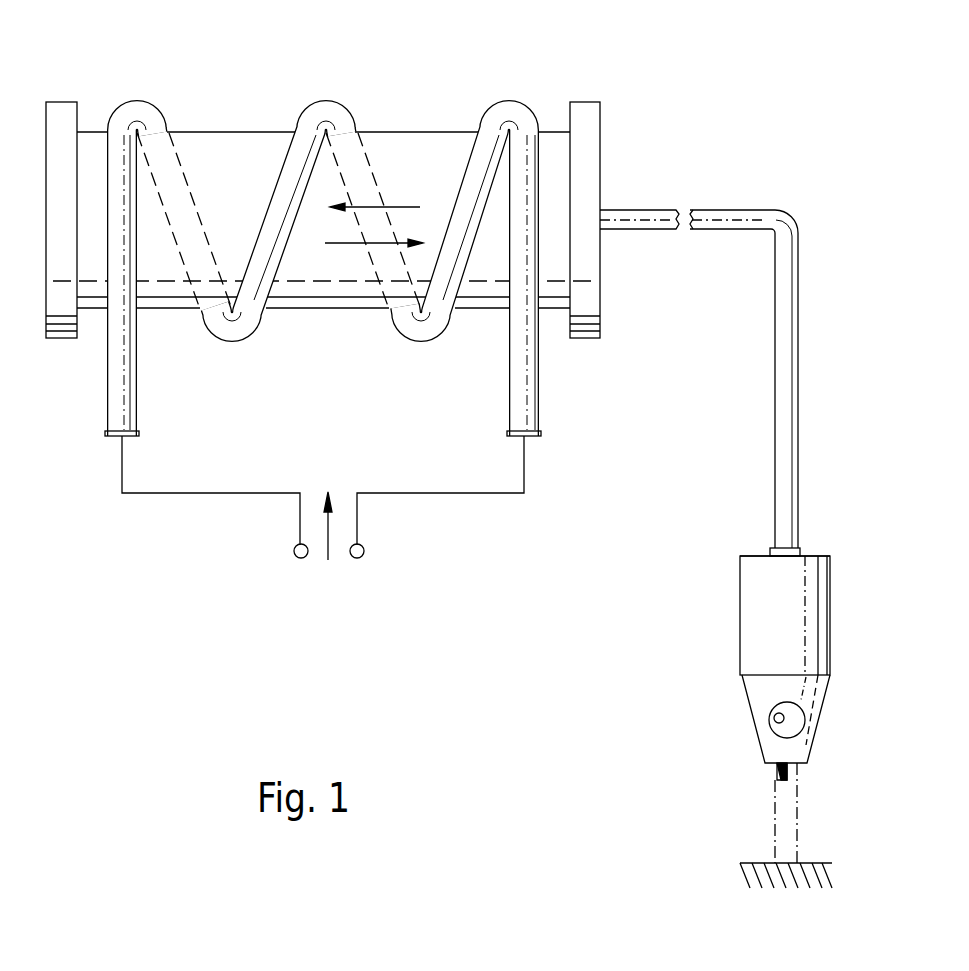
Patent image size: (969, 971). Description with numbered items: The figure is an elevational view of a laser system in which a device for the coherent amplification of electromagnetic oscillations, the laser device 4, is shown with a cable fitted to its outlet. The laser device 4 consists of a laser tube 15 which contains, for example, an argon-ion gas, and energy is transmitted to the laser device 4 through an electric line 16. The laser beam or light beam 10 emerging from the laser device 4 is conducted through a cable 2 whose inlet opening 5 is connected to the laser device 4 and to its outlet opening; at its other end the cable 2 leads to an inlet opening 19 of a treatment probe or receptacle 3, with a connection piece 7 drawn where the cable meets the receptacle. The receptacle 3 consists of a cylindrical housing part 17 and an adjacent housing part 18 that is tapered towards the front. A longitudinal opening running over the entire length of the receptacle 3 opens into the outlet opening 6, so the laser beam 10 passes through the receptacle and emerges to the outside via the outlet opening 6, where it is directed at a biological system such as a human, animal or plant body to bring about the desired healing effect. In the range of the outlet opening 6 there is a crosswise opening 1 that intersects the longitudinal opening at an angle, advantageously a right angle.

The crosswise opening 1 is at (776, 720).
The cable 2 is at (768, 215).
The treatment probe 3 is at (767, 643).
The laser device 4 is at (408, 118).
The inlet opening 5 is at (609, 208).
The outlet opening 6 is at (775, 782).
The connecting fitting 7 is at (778, 545).
The laser beam 10 is at (772, 810).
The laser tube 15 is at (211, 137).
The electric line 16 is at (480, 493).
The cylindrical housing part 17 is at (755, 620).
The tapered housing part 18 is at (757, 692).
The inlet opening 19 is at (775, 568).